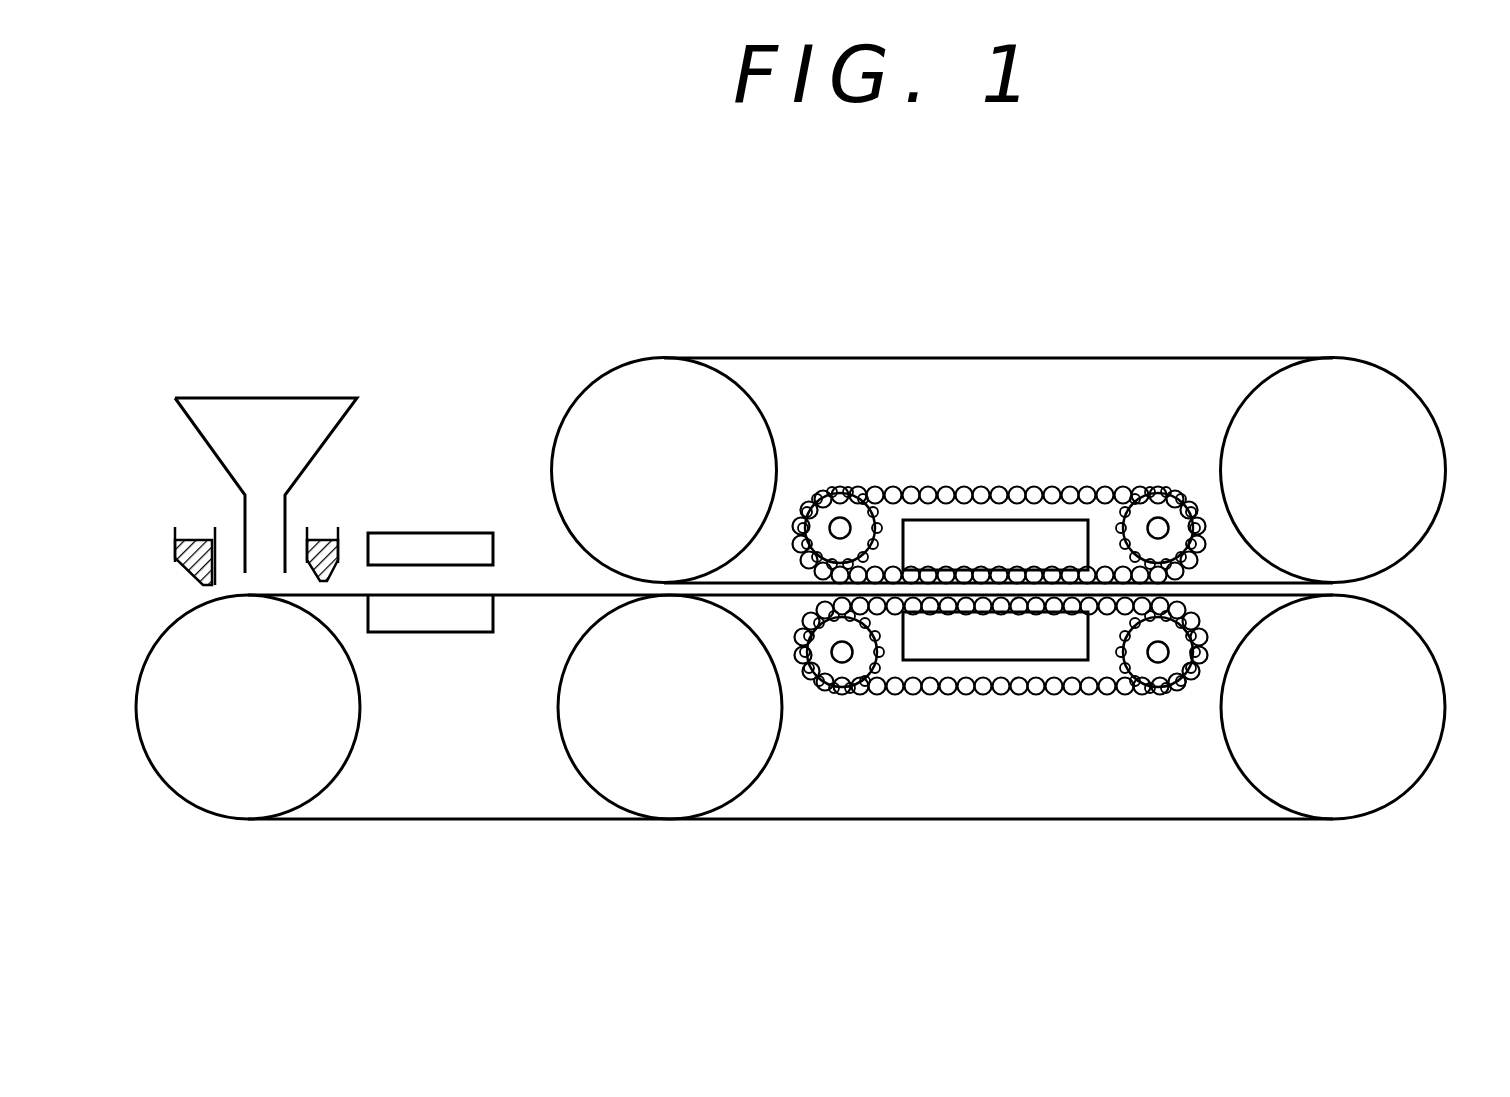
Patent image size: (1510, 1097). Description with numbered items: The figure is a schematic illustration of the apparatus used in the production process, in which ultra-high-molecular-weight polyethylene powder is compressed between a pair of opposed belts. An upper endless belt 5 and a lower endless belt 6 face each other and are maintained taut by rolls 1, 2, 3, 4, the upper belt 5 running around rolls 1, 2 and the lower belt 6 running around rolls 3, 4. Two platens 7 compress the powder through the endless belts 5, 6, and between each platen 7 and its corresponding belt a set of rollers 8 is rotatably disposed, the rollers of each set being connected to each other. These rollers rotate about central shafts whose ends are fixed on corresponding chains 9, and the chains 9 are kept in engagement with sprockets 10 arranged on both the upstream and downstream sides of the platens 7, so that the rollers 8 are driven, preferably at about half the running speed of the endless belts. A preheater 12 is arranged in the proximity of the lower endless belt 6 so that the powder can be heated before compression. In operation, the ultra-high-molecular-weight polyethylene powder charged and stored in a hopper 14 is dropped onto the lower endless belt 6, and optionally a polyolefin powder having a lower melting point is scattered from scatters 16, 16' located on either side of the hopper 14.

The roll 1 is at (605, 370).
The roll 2 is at (1408, 383).
The roll 3 is at (208, 813).
The roll 4 is at (1440, 668).
The upper endless belt 5 is at (1095, 358).
The lower endless belt 6 is at (548, 597).
The platen 7 is at (1035, 533).
The rollers 8 is at (928, 572).
The chain 9 is at (920, 693).
The sprocket 10 is at (842, 522).
The preheater 12 is at (437, 533).
The hopper 14 is at (272, 397).
The scatter 16 is at (181, 519).
The scatter 16' is at (354, 517).